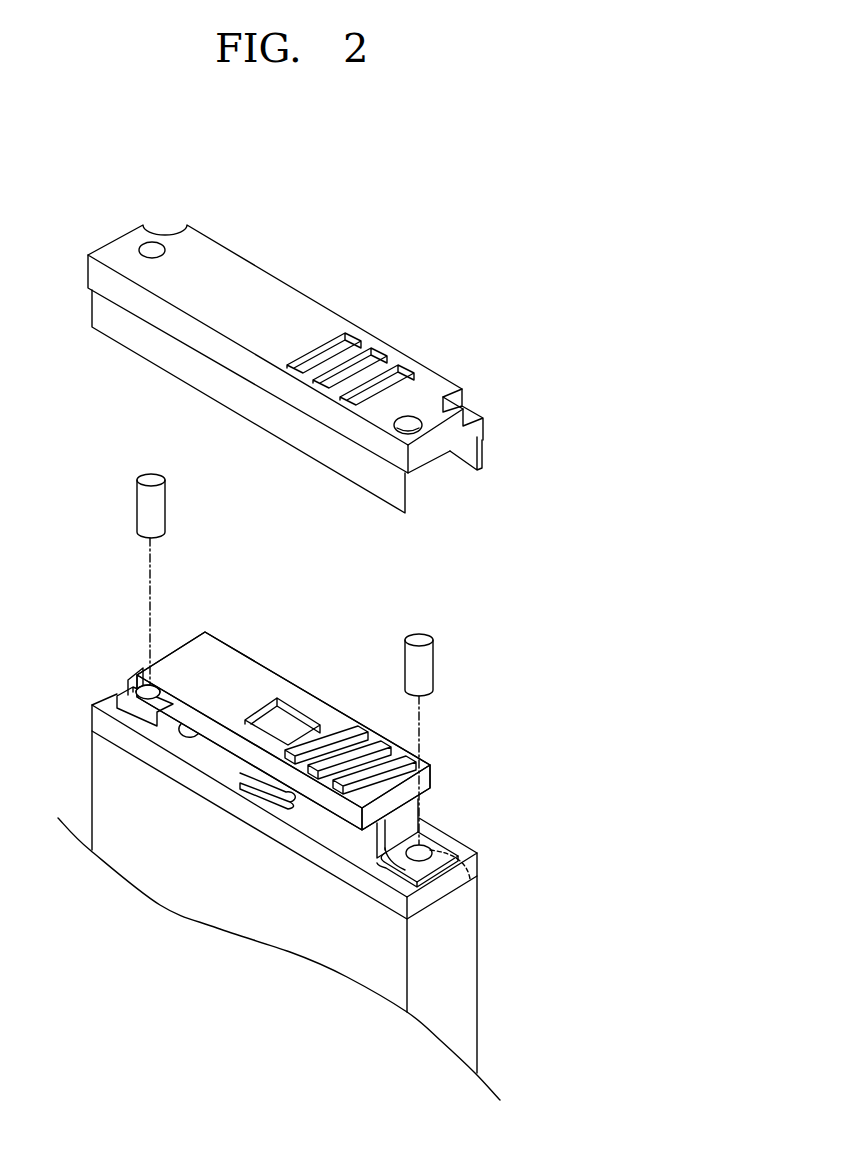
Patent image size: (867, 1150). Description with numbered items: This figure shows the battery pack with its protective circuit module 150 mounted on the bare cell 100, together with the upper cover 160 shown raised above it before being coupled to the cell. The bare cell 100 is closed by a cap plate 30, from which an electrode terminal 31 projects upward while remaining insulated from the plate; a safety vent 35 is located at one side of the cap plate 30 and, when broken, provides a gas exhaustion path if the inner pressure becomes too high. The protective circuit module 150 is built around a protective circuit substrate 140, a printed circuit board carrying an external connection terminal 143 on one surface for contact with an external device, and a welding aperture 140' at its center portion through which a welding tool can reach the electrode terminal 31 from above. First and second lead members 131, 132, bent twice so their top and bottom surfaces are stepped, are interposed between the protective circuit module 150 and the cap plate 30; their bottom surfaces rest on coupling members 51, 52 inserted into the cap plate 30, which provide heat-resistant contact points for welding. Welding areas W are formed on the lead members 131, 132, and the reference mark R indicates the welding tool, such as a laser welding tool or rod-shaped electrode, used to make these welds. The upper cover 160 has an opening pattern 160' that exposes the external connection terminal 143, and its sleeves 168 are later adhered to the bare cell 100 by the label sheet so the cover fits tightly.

The bare cell 100 is at (478, 968).
The cap plate 30 is at (318, 858).
The electrode terminal 31 is at (266, 787).
The safety vent 35 is at (187, 725).
The coupling member 51 is at (452, 852).
The coupling member 52 is at (120, 688).
The first lead member 131 is at (452, 868).
The second lead member 132 is at (128, 708).
The protective circuit substrate 140 is at (283, 716).
The welding aperture 140' is at (302, 692).
The external connection terminal 143 is at (352, 726).
The protective circuit module 150 is at (458, 766).
The upper cover 160 is at (285, 365).
The opening pattern 160' is at (368, 327).
The sleeves 168 is at (483, 452).
The welding tool R is at (166, 507).
The welding areas W is at (150, 681).